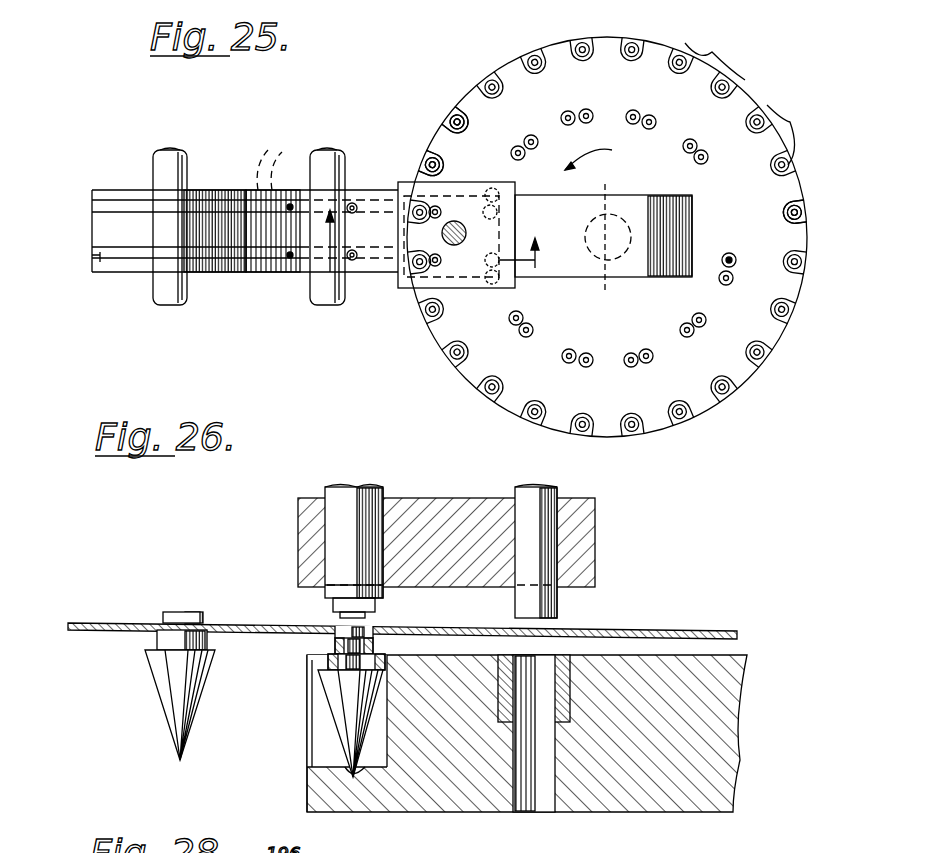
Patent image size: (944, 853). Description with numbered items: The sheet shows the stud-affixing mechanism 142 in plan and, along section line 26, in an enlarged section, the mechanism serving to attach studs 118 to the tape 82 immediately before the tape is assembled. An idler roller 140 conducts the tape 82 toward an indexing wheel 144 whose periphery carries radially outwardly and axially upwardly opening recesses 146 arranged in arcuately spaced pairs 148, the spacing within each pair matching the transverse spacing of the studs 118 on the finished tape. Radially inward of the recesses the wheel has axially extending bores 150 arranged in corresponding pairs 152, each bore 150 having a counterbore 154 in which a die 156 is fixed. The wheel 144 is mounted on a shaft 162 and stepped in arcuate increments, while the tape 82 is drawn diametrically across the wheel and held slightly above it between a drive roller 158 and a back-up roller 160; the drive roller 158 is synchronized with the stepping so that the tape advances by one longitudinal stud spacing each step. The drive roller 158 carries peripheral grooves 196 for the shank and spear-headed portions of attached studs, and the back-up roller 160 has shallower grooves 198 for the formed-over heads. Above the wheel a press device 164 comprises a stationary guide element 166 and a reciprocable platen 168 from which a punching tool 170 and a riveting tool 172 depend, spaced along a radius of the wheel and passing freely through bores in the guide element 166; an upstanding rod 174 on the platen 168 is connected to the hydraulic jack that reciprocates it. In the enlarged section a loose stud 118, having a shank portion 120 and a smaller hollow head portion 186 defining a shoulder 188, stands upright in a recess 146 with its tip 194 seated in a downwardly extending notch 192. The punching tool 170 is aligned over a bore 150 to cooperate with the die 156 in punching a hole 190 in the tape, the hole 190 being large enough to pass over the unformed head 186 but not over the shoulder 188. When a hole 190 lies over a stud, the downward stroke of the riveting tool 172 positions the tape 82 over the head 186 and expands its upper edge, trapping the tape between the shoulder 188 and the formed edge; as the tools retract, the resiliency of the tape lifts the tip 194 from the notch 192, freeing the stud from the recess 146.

In FIG. 25, the section line 26 is at (467, 223).
In FIG. 25, the tape 82 is at (692, 265).
In FIG. 26, the tape 82 is at (713, 631).
In FIG. 25, the stud 118 is at (438, 152).
In FIG. 26, the stud 118 is at (320, 715).
In FIG. 26, the shank portion 120 is at (328, 666).
In FIG. 25, the idler roller 140 is at (586, 280).
In FIG. 25, the stud-affixing mechanism 142 is at (408, 128).
In FIG. 25, the indexing wheel 144 is at (634, 342).
In FIG. 26, the indexing wheel 144 is at (737, 682).
In FIG. 25, the recess 146 is at (644, 46).
In FIG. 26, the recess 146 is at (318, 742).
In FIG. 25, the pair of recesses 148 is at (742, 50).
In FIG. 25, the bore 150 is at (730, 257).
In FIG. 26, the bore 150 is at (535, 792).
In FIG. 25, the pair of bores 152 is at (616, 178).
In FIG. 26, the counterbore 154 is at (575, 672).
In FIG. 26, the die 156 is at (604, 656).
In FIG. 25, the drive roller 158 is at (268, 282).
In FIG. 25, the back-up roller 160 is at (104, 276).
In FIG. 25, the shaft 162 is at (605, 200).
In FIG. 25, the press device 164 is at (396, 292).
In FIG. 26, the stationary guide element 166 is at (298, 512).
In FIG. 25, the reciprocable platen 168 is at (430, 295).
In FIG. 26, the punching tool 170 is at (620, 552).
In FIG. 26, the riveting tool 172 is at (340, 503).
In FIG. 25, the rod 174 is at (450, 226).
In FIG. 26, the head portion 186 is at (335, 646).
In FIG. 26, the shoulder 188 is at (633, 844).
In FIG. 26, the hole 190 is at (345, 630).
In FIG. 26, the notch 192 is at (375, 778).
In FIG. 26, the tip 194 is at (313, 793).
In FIG. 25, the peripheral grooves 196 is at (220, 164).
In FIG. 25, the grooves 198 is at (100, 258).